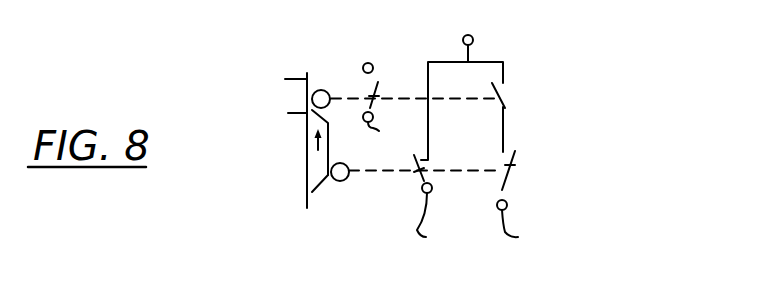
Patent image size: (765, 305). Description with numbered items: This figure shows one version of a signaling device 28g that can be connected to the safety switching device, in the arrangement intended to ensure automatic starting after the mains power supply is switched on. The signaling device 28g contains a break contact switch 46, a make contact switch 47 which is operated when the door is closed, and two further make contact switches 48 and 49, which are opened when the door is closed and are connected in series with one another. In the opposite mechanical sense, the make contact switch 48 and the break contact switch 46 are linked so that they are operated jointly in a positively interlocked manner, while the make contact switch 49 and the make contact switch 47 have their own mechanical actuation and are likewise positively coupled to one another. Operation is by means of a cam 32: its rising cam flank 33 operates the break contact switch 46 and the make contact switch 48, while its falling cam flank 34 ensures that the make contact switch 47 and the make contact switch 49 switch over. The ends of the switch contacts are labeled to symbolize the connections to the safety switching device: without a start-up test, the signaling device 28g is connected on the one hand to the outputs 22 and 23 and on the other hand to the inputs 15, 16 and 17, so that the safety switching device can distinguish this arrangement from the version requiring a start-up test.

The input 15 is at (386, 131).
The input 16 is at (434, 219).
The input 17 is at (523, 227).
The output 22 is at (369, 62).
The output 23 is at (474, 33).
The signaling device 28g is at (570, 128).
The cam 32 is at (300, 177).
The rising cam flank 33 is at (309, 118).
The falling cam flank 34 is at (315, 186).
The break contact switch 46 is at (371, 82).
The make contact switch 47 is at (418, 177).
The make contact switch 48 is at (500, 90).
The make contact switch 49 is at (513, 162).